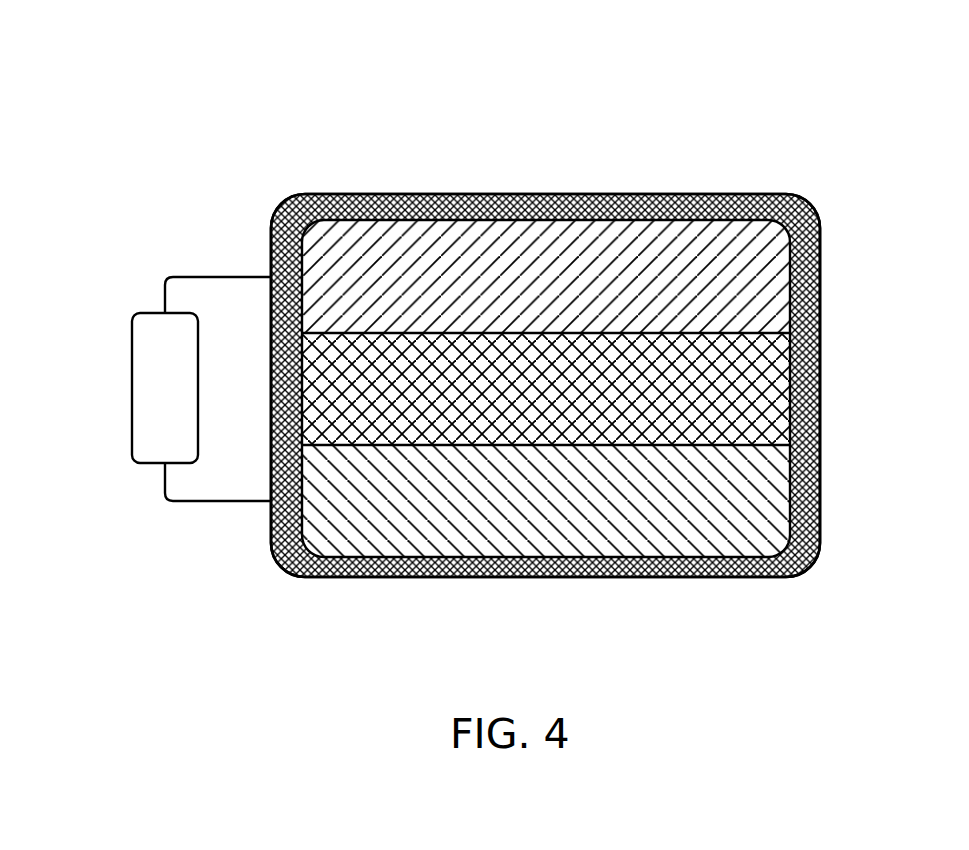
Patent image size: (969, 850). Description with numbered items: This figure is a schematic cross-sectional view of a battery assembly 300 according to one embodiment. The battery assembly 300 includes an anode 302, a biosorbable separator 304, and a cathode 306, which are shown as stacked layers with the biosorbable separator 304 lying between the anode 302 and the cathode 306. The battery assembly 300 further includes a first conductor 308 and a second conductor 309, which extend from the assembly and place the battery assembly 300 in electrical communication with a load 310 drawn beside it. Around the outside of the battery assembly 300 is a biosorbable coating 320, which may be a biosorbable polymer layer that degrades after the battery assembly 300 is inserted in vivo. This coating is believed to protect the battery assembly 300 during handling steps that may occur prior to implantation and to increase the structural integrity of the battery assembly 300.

The battery assembly 300 is at (587, 172).
The anode 302 is at (428, 247).
The biosorbable separator 304 is at (675, 345).
The cathode 306 is at (522, 527).
The first conductor 308 is at (168, 277).
The second conductor 309 is at (168, 501).
The load 310 is at (150, 377).
The biosorbable coating 320 is at (653, 572).